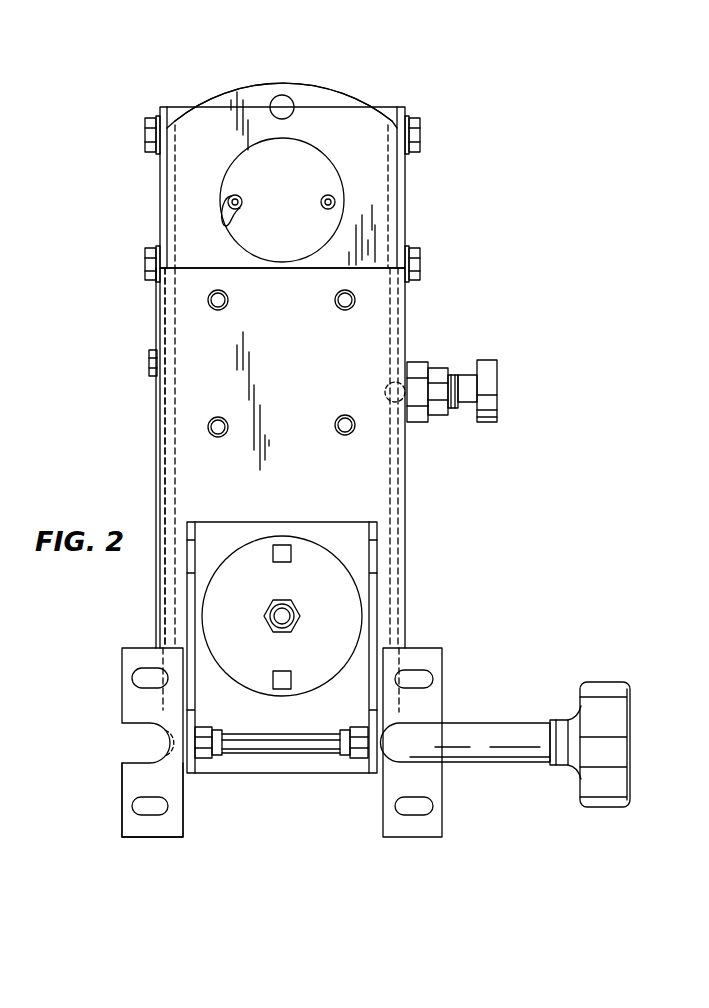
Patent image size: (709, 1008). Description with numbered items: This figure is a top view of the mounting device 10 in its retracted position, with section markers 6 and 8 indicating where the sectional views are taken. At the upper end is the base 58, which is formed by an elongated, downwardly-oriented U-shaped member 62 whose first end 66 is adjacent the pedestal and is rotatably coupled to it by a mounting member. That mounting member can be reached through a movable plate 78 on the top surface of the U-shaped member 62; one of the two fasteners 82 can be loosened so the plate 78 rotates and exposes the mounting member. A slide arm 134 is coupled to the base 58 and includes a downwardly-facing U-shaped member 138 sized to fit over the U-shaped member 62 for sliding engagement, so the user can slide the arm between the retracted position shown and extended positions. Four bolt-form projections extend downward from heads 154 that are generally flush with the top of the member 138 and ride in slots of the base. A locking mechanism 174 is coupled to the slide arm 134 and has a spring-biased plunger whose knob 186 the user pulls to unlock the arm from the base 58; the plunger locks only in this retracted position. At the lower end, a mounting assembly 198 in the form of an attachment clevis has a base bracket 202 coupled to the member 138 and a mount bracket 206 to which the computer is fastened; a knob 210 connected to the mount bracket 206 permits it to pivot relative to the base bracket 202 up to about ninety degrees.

The mounting device 10 is at (506, 199).
The base 58 is at (208, 86).
The U-shaped member 62 is at (375, 178).
The first end 66 is at (350, 95).
The movable plate 78 is at (233, 172).
The fasteners 82 is at (217, 195).
The slide arm 134 is at (148, 311).
The U-shaped member 138 is at (192, 338).
The heads 154 is at (228, 297).
The locking mechanism 174 is at (434, 446).
The knob 186 is at (487, 358).
The mounting assembly 198 is at (100, 694).
The base bracket 202 is at (373, 588).
The mount bracket 206 is at (178, 818).
The knob 210 is at (630, 742).
The section line 6 is at (98, 392).
The section line 8 is at (282, 47).